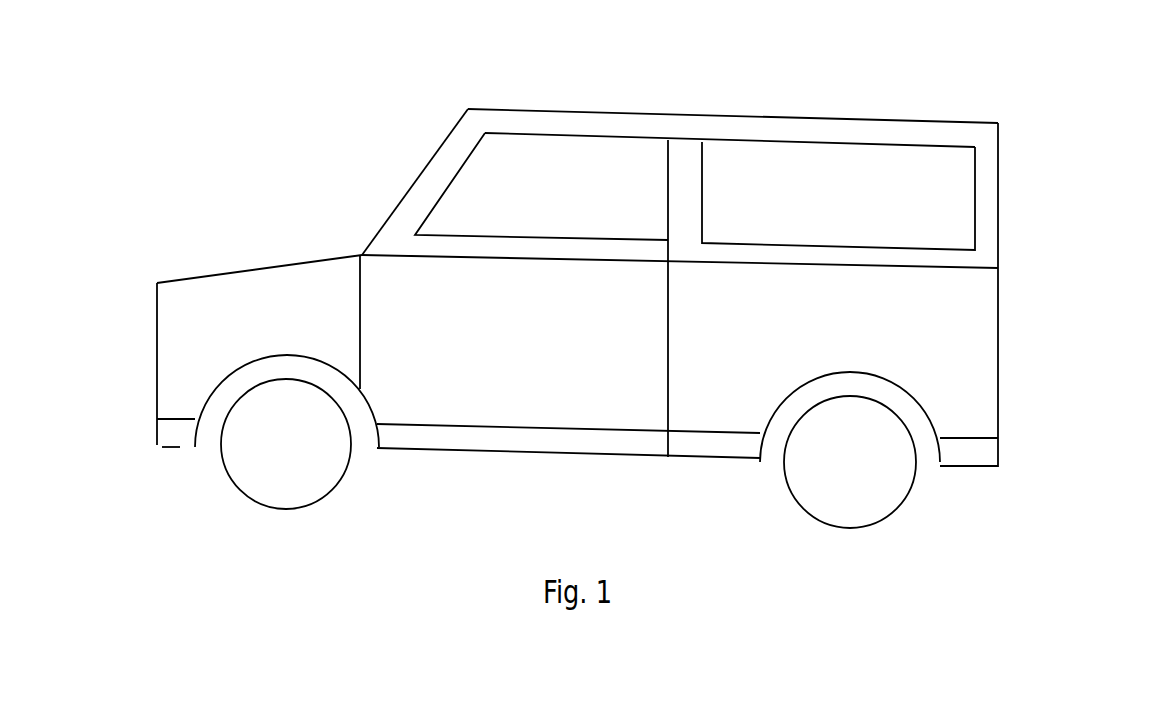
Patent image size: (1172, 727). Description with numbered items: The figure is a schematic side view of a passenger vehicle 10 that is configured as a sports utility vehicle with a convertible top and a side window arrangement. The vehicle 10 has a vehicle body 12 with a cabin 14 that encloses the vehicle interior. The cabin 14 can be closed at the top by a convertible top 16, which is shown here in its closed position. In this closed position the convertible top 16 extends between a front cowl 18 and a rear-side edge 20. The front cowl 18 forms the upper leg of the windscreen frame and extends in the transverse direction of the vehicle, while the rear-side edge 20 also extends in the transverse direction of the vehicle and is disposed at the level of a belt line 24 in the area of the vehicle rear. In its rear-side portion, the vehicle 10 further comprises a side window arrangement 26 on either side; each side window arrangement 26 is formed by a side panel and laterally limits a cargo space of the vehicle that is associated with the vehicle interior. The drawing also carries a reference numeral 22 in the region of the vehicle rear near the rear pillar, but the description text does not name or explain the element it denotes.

The passenger vehicle 10 is at (577, 291).
The vehicle body 12 is at (255, 268).
The cabin 14 is at (467, 208).
The convertible top 16 is at (772, 132).
The front cowl 18 is at (467, 126).
The rear-side edge 20 is at (908, 269).
The rear pillar 22 is at (998, 207).
The belt line 24 is at (908, 269).
The side window arrangement 26 is at (918, 158).